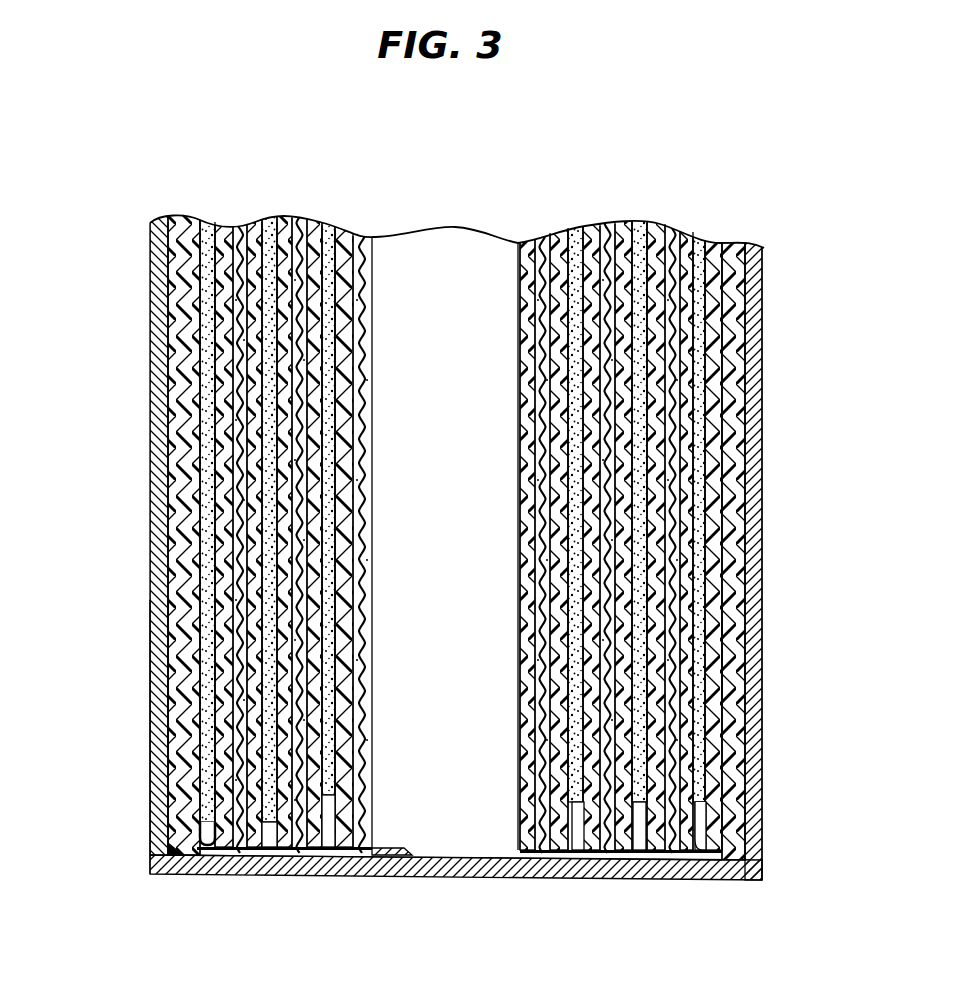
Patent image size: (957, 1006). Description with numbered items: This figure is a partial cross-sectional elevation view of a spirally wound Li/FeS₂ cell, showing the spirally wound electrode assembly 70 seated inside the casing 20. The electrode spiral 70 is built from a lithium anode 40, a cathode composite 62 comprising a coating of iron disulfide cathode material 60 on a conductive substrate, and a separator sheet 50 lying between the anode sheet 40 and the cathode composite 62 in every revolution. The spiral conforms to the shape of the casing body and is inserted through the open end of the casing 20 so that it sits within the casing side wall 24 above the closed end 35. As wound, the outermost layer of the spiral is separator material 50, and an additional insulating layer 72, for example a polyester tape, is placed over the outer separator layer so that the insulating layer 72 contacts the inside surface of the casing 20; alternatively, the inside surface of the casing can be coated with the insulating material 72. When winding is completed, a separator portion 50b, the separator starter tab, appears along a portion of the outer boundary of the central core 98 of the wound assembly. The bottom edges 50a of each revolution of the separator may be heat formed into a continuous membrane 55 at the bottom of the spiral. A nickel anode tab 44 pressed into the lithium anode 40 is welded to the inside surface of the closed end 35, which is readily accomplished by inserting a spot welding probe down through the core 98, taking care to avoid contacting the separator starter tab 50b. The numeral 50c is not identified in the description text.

The casing 20 is at (150, 350).
The casing side wall 24 is at (152, 673).
The closed end of casing 35 is at (640, 880).
The lithium anode 40 is at (207, 220).
The anode tab 44 is at (395, 858).
The separator sheet 50 is at (190, 222).
The bottom edges of separator 50a is at (250, 856).
The separator portion (separator starter tab) 50b is at (540, 238).
The separator side portion 50c is at (725, 637).
The continuous membrane 55 is at (330, 850).
The cathode material 60 is at (240, 228).
The cathode composite 62 is at (206, 748).
The spirally wound electrode assembly 70 is at (185, 787).
The insulating layer 72 is at (172, 438).
The core 98 is at (420, 238).